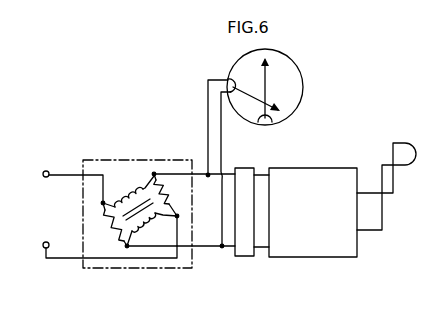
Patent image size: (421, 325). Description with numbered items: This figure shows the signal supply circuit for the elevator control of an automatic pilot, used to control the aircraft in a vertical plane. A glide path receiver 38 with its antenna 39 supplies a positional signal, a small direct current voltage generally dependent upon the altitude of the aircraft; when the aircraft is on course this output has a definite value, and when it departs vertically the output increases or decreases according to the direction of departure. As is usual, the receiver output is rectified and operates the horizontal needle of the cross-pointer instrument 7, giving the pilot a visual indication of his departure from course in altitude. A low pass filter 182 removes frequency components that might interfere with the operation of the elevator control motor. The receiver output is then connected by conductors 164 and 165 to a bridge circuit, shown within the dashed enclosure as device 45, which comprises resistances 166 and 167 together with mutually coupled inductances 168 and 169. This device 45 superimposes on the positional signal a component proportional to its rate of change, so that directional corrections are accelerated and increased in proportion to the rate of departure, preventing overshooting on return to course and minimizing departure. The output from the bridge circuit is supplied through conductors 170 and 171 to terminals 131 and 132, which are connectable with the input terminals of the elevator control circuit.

The cross-pointer instrument 7 is at (288, 66).
The glide path receiver 38 is at (306, 167).
The antenna 39 is at (406, 153).
The rate of change measuring device 45 is at (104, 162).
The terminal 131 is at (33, 182).
The terminal 132 is at (43, 244).
The conductor 164 is at (183, 176).
The conductor 165 is at (185, 250).
The resistance 166 is at (174, 195).
The resistance 167 is at (112, 236).
The mutually coupled inductance 168 is at (131, 190).
The mutually coupled inductance 169 is at (152, 229).
The conductor 170 is at (77, 176).
The conductor 171 is at (75, 258).
The low pass filter 182 is at (243, 172).